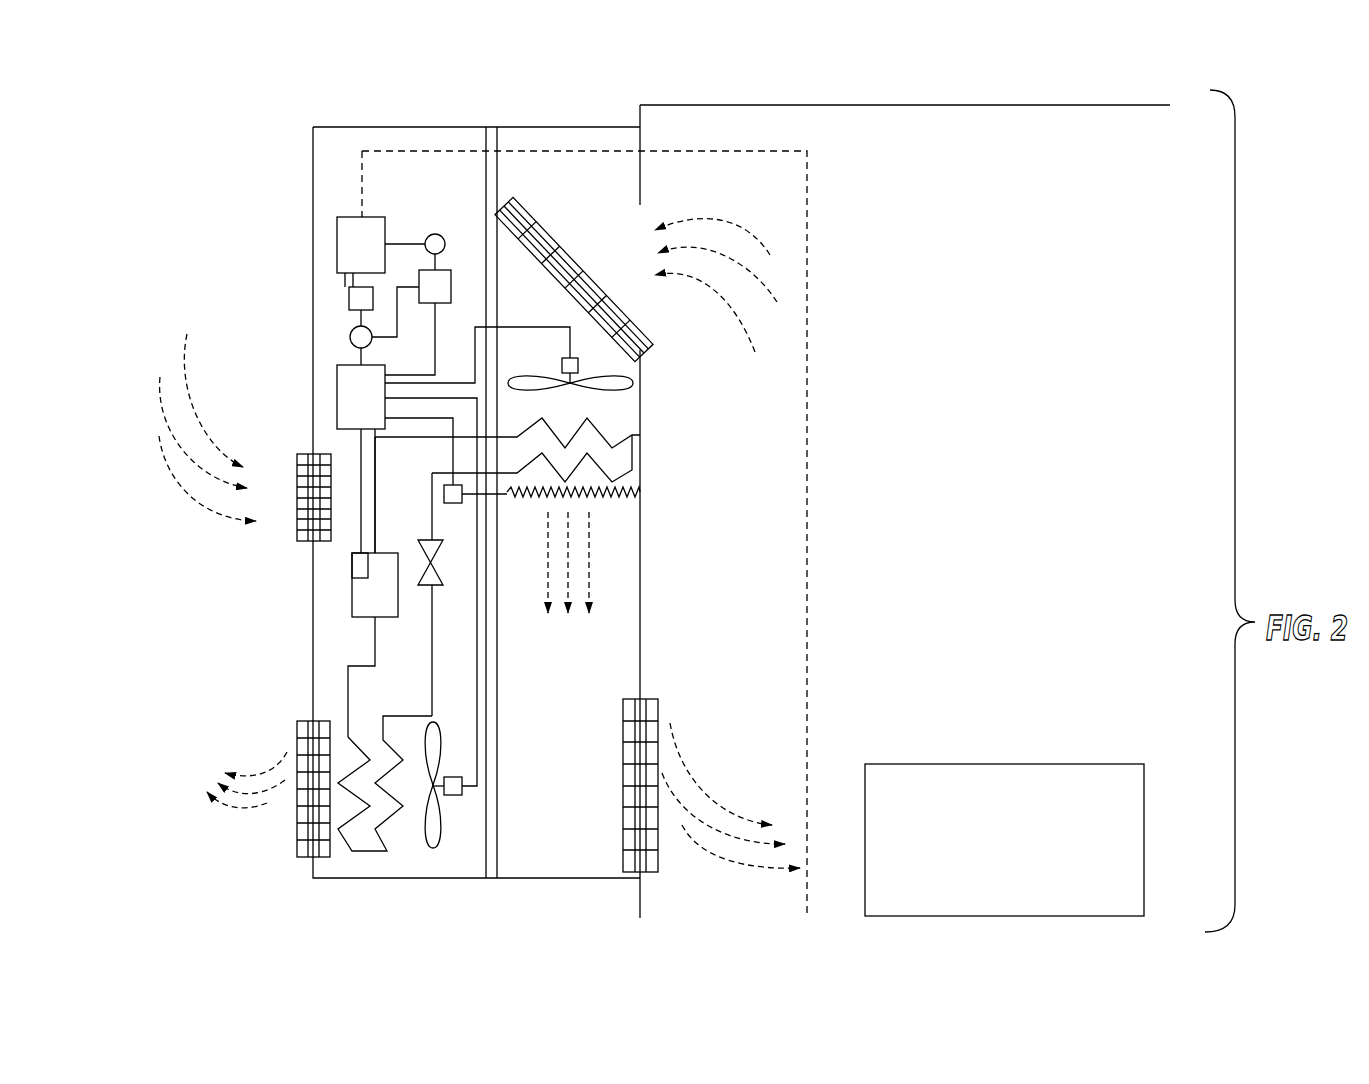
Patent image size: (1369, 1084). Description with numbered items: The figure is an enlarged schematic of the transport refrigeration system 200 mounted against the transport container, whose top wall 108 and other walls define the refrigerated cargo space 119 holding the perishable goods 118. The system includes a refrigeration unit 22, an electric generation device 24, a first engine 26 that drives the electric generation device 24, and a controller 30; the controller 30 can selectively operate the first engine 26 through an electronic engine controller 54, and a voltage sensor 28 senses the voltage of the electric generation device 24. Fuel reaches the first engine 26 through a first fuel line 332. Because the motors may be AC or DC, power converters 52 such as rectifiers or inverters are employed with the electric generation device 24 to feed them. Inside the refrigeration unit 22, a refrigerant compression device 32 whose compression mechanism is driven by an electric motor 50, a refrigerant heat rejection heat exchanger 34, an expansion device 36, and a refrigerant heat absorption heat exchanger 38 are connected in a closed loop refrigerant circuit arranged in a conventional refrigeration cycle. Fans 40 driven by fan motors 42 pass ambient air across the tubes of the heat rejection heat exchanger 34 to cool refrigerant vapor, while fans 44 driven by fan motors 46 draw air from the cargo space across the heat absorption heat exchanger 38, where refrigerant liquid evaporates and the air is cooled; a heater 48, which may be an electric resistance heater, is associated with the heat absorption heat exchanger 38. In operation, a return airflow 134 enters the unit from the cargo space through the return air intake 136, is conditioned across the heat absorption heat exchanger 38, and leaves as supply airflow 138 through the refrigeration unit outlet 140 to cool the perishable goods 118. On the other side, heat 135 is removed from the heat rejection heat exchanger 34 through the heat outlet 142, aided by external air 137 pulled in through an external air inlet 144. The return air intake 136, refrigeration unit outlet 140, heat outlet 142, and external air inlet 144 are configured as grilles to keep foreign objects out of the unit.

The transport refrigeration system 200 is at (150, 156).
The refrigeration unit 22 is at (312, 140).
The top wall 108 is at (930, 105).
The refrigerated cargo space 119 is at (1040, 337).
The perishable goods 118 is at (967, 764).
The first fuel line 332 is at (807, 530).
The first engine 26 is at (337, 240).
The electric generation device 24 is at (349, 294).
The voltage sensor 28 is at (350, 337).
The controller 30 is at (443, 305).
The electronic engine controller 54 is at (445, 248).
The power converters 52 is at (337, 388).
The electric motor 50 is at (352, 565).
The refrigerant compression device 32 is at (352, 603).
The expansion device 36 is at (443, 566).
The refrigerant heat rejection heat exchanger 34 is at (373, 852).
The fans 40 is at (437, 842).
The fan motors 42 is at (462, 793).
The fan motors 46 is at (562, 365).
The fans 44 is at (633, 383).
The refrigerant heat absorption heat exchanger 38 is at (638, 438).
The heater 48 is at (640, 490).
The return air intake 136 is at (563, 252).
The return airflow 134 is at (752, 334).
The external air 137 is at (164, 409).
The external air inlet 144 is at (297, 535).
The heat outlet 142 is at (297, 727).
The heat 135 is at (232, 808).
The refrigeration unit outlet 140 is at (623, 712).
The supply airflow 138 is at (693, 780).